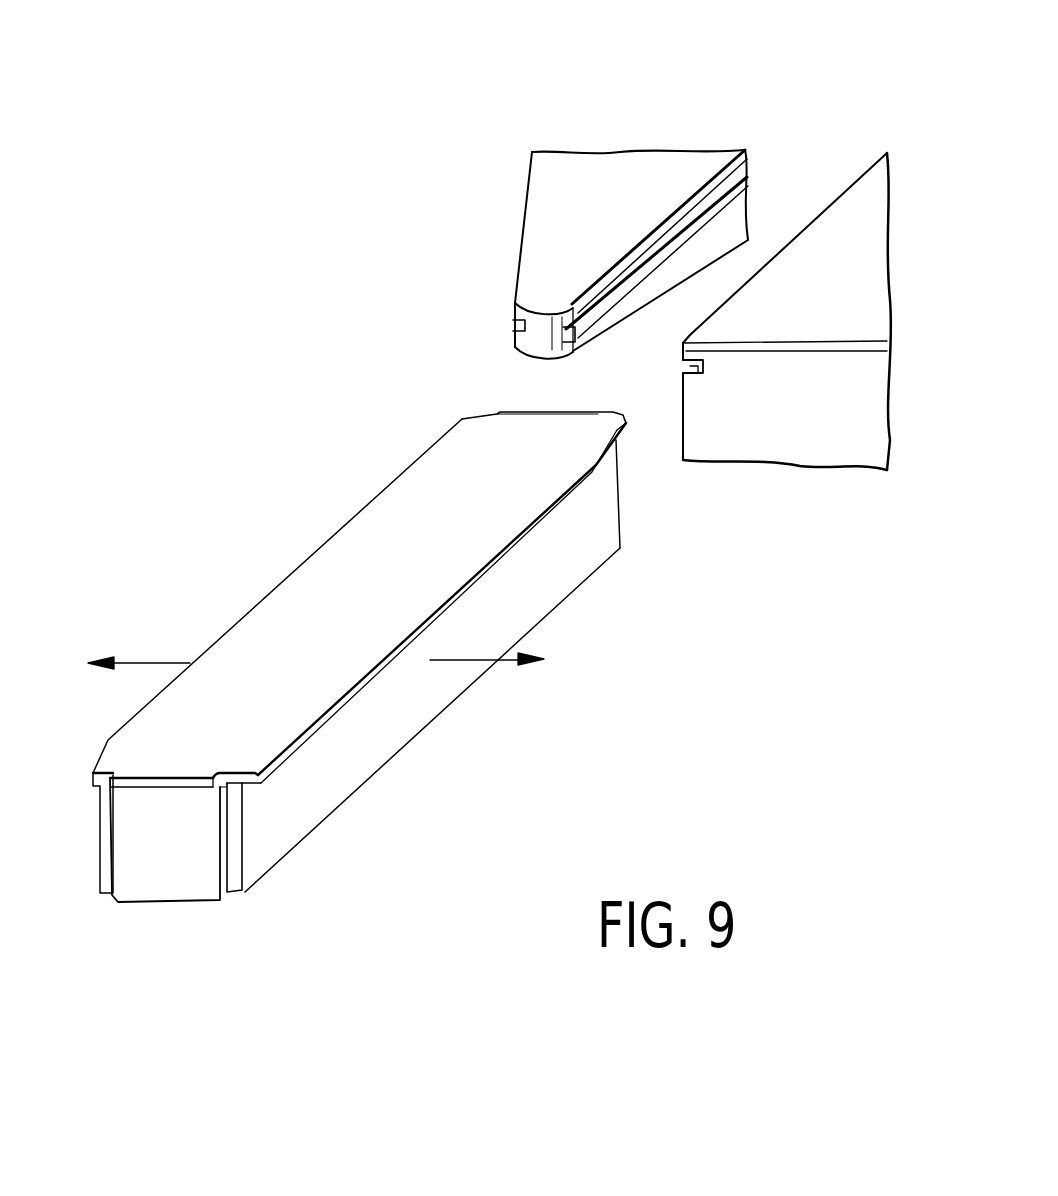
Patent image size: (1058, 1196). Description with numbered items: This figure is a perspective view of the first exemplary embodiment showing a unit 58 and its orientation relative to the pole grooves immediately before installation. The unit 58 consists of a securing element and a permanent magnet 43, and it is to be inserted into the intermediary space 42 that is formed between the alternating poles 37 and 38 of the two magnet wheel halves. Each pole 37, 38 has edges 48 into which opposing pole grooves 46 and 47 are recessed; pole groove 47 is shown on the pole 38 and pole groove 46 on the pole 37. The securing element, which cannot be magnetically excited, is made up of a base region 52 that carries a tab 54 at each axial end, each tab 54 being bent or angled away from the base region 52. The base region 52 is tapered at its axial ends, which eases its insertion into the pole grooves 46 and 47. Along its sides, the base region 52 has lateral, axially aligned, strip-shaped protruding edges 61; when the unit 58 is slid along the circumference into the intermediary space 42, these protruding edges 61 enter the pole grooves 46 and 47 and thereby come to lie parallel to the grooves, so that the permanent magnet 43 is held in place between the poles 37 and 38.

The pole 37 is at (856, 200).
The pole 38 is at (563, 174).
The intermediary space 42 is at (780, 188).
The permanent magnet 43 is at (352, 755).
The pole groove 46 is at (692, 366).
The pole groove 47 is at (513, 326).
The edge 48 is at (698, 244).
The base region 52 is at (250, 662).
The tab 54 is at (168, 858).
The unit 58 is at (285, 569).
The protruding edge 61 is at (410, 640).